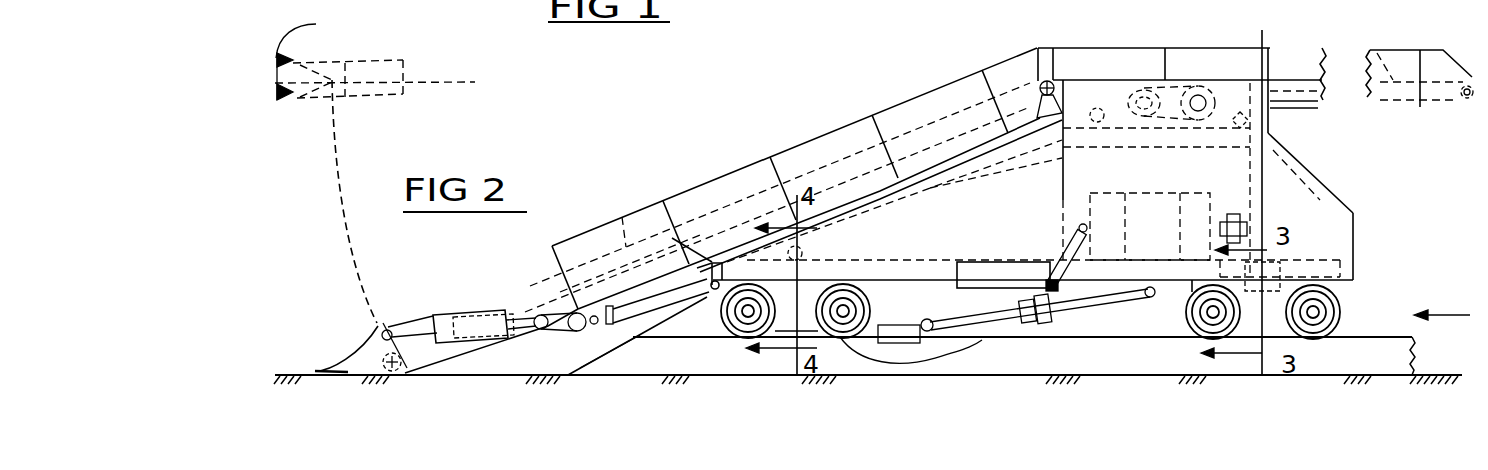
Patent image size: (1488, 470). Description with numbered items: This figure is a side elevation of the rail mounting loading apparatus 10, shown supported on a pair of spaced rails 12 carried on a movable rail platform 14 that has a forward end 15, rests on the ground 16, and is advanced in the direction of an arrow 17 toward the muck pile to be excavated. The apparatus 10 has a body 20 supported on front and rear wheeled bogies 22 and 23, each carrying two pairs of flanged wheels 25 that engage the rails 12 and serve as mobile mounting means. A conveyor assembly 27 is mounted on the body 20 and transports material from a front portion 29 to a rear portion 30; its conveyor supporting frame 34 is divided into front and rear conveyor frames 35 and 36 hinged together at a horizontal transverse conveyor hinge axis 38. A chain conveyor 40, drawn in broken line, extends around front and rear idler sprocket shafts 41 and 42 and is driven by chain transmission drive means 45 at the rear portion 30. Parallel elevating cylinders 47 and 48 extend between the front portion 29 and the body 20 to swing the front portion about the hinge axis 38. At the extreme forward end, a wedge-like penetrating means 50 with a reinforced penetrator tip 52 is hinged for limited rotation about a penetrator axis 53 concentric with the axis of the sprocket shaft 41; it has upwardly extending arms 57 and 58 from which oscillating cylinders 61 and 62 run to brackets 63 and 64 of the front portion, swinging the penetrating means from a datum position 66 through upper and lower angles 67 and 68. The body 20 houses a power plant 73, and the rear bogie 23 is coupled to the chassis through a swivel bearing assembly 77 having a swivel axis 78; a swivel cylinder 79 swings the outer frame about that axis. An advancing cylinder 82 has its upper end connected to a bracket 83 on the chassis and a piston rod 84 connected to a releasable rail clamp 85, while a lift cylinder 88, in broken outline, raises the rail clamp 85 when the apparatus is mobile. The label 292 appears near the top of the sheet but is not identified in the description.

The rail mounting loading apparatus 10 is at (784, 102).
The rails 12 is at (1353, 336).
The movable rail platform 14 is at (1095, 372).
The forward end 15 is at (583, 366).
The ground 16 is at (597, 327).
The arrow 17 is at (1441, 318).
The body 20 is at (1370, 157).
The front wheeled bogie 22 is at (731, 347).
The rear wheeled bogie 23 is at (1320, 345).
The flanged wheels 25 is at (843, 283).
The conveyor assembly 27 is at (984, 60).
The front portion of the conveyor assembly 29 is at (593, 250).
The rear portion of the conveyor assembly 30 is at (1175, 67).
The conveyor supporting frame 34 is at (892, 120).
The front conveyor frame 35 is at (687, 221).
The rear conveyor frame 36 is at (1233, 52).
The conveyor hinge axis 38 is at (1047, 80).
The chain conveyor 40 is at (622, 217).
The front idler sprocket shaft 41 is at (382, 345).
The rear idler sprocket shaft 42 is at (1465, 85).
The chain transmission drive means 45 is at (1197, 117).
The elevating cylinder 47 is at (647, 308).
The elevating cylinder 48 is at (637, 336).
The penetrating means 50 is at (338, 360).
The penetrator tip 52 is at (316, 372).
The penetrator axis 53 is at (408, 370).
The arm 57 is at (388, 330).
The arm 58 is at (387, 335).
The oscillating cylinder 61 is at (448, 312).
The oscillating cylinder 62 is at (462, 326).
The bracket 63 is at (500, 347).
The bracket 64 is at (501, 341).
The datum position 66 is at (270, 87).
The upper angle 67 is at (307, 38).
The lower angle 68 is at (275, 95).
The power plant 73 is at (1163, 200).
The swivel bearing assembly 77 is at (1297, 258).
The swivel axis 78 is at (1265, 215).
The swivel cylinder 79 is at (822, 252).
The advancing cylinder 82 is at (1060, 306).
The bracket 83 is at (1157, 288).
The piston rod 84 is at (993, 316).
The rail clamp 85 is at (932, 320).
The lift cylinder 88 is at (1057, 258).
The boom (FIG. 1) 292 is at (377, 1).